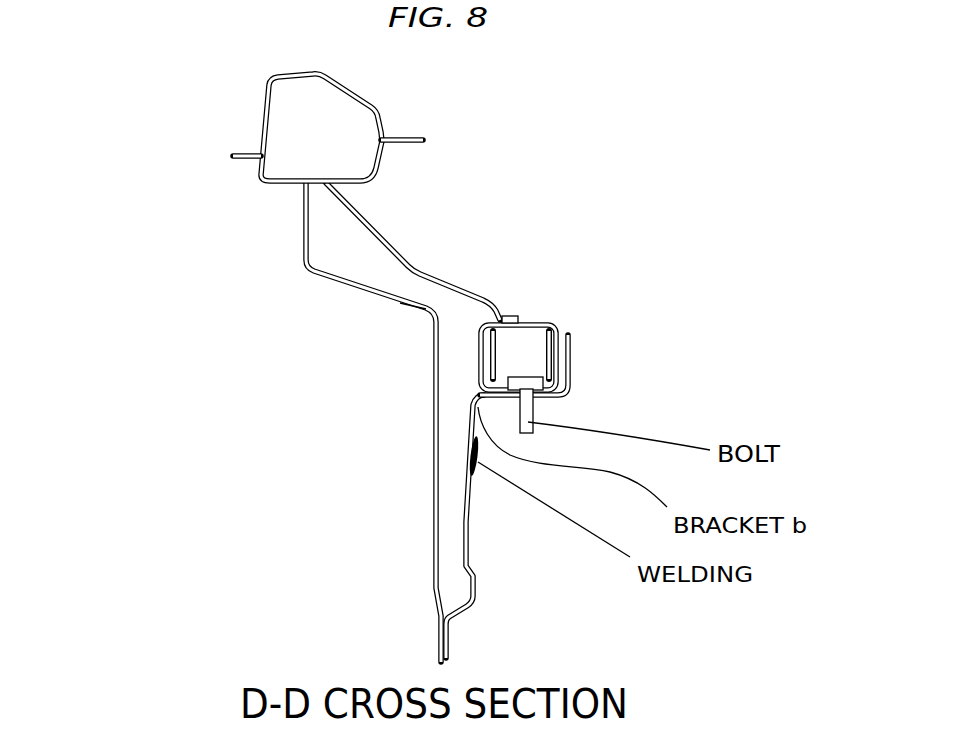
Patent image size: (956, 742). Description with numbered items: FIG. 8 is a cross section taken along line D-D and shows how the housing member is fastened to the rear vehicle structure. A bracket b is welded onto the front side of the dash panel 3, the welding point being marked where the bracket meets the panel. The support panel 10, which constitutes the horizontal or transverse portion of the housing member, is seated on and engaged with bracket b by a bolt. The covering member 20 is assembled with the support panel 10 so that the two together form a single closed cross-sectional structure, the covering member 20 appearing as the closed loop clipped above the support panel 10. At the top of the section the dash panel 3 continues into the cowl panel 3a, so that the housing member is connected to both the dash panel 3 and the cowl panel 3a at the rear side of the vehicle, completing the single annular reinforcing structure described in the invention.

The dash panel 3 is at (437, 382).
The cowl panel 3a is at (270, 123).
The support panel 10 is at (573, 393).
The covering member 20 is at (543, 322).